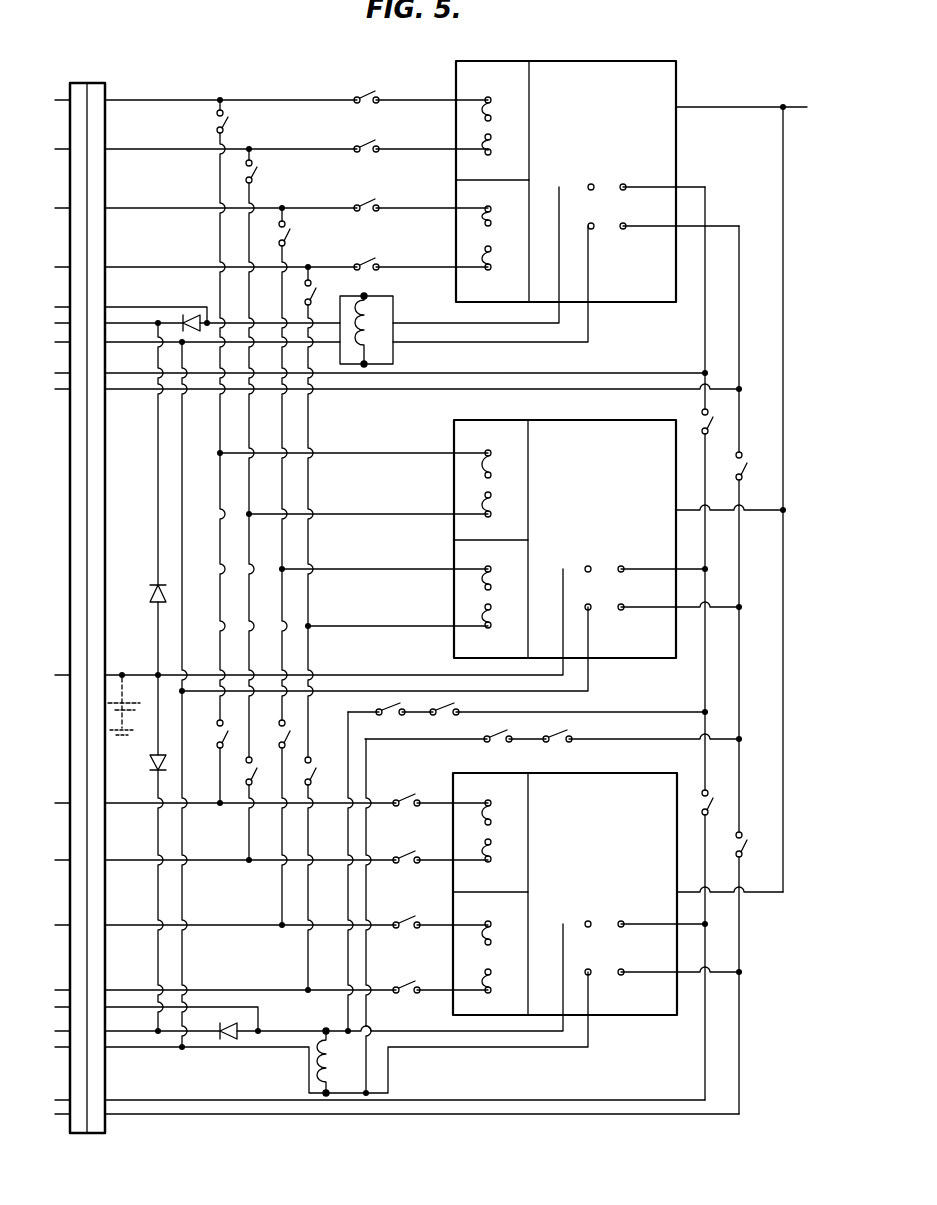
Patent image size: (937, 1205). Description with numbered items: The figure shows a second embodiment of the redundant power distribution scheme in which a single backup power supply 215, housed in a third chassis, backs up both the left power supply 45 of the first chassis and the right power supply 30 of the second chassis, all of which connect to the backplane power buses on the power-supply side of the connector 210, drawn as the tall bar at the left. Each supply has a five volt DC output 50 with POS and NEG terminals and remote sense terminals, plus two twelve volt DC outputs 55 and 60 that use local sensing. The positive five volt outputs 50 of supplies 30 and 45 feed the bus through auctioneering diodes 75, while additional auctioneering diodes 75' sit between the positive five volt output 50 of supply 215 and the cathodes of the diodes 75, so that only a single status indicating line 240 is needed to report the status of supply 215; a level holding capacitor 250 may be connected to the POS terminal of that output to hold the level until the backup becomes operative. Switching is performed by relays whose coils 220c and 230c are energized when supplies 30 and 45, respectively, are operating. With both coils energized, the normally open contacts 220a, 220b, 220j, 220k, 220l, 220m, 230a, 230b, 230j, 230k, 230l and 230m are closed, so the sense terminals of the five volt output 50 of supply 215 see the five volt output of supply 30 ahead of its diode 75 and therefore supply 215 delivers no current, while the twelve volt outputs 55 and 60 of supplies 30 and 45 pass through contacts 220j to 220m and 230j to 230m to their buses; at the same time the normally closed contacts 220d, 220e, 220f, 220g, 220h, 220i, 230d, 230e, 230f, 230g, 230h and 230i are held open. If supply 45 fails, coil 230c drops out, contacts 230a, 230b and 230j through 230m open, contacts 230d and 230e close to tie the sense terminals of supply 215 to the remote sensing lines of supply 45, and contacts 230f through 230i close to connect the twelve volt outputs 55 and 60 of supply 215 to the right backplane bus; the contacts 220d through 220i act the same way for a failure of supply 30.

The connector 210 is at (88, 1135).
The power supply 45 is at (647, 312).
The power supply 215 is at (640, 664).
The power supply 30 is at (643, 1021).
The twelve volt DC output 60 is at (456, 68).
The twelve volt DC output 55 is at (456, 286).
The five volt DC output 50 is at (617, 302).
The auctioneering diode 75 is at (212, 679).
The auctioneering diode 75' is at (141, 666).
The status indicating line 240 is at (122, 672).
The level holding capacitor 250 is at (134, 703).
The relay coil 230c is at (375, 346).
The relay coil 220c is at (318, 1068).
The normally open relay contact 230a is at (382, 703).
The normally open relay contact 230b is at (500, 732).
The normally closed relay contact 230d is at (703, 420).
The normally closed relay contact 230e is at (744, 462).
The normally closed relay contact 230f is at (316, 294).
The normally closed relay contact 230g is at (289, 237).
The normally closed relay contact 230h is at (255, 173).
The normally closed relay contact 230i is at (231, 125).
The normally open relay contact 230j is at (374, 261).
The normally open relay contact 230k is at (374, 200).
The normally open relay contact 230l is at (374, 142).
The normally open relay contact 230m is at (363, 94).
The normally open relay contact 220a is at (449, 708).
The normally open relay contact 220b is at (562, 734).
The normally closed relay contact 220d is at (711, 806).
The normally closed relay contact 220e is at (744, 846).
The normally closed relay contact 220f is at (312, 774).
The normally closed relay contact 220g is at (289, 737).
The normally closed relay contact 220h is at (245, 767).
The normally closed relay contact 220i is at (217, 731).
The normally open relay contact 220j is at (404, 982).
The normally open relay contact 220k is at (403, 918).
The normally open relay contact 220l is at (405, 852).
The normally open relay contact 220m is at (387, 798).